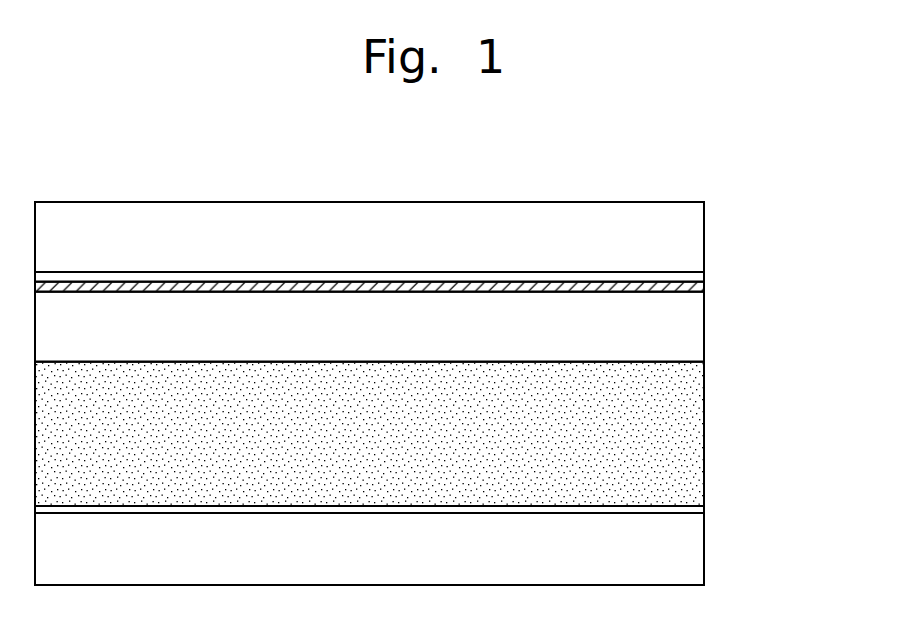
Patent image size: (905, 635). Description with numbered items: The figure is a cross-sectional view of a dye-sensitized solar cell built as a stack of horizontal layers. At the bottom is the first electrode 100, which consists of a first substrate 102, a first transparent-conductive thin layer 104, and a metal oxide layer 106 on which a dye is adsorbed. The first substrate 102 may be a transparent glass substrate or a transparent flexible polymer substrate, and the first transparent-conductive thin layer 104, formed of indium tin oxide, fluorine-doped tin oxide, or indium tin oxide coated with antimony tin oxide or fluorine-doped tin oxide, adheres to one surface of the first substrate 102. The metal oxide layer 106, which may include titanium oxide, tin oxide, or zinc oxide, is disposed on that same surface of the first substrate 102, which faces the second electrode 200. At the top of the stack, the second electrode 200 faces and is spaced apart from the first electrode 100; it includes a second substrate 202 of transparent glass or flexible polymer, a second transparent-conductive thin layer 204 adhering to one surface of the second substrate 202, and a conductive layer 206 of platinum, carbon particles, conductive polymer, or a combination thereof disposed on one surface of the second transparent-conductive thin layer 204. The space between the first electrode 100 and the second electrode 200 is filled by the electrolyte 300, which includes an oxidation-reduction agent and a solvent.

The first electrode 100 is at (439, 473).
The first substrate 102 is at (410, 549).
The first transparent-conductive thin layer 104 is at (704, 508).
The metal oxide layer 106 is at (704, 440).
The second electrode 200 is at (439, 257).
The second substrate 202 is at (704, 238).
The second transparent-conductive thin layer 204 is at (704, 273).
The conductive layer 206 is at (704, 285).
The electrolyte 300 is at (704, 332).